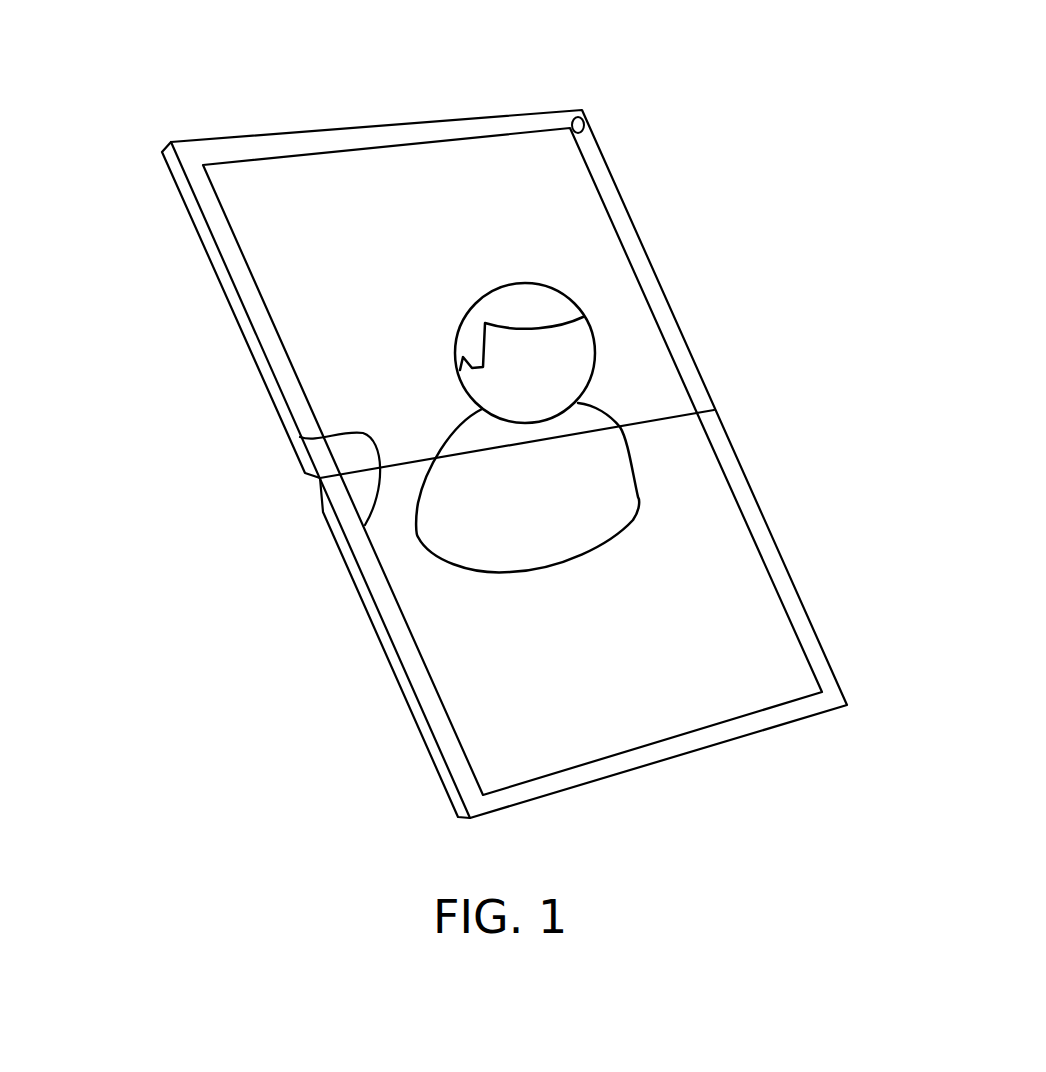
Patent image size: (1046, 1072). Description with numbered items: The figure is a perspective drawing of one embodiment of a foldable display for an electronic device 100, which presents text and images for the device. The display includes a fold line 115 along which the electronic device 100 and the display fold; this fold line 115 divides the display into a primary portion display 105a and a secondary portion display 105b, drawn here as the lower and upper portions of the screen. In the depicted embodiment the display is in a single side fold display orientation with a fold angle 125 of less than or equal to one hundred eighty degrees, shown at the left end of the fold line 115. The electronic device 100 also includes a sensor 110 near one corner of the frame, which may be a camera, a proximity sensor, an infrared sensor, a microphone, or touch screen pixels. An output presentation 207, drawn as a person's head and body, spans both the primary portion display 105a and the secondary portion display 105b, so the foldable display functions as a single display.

The electronic device 100 is at (92, 117).
The primary portion display 105a is at (713, 568).
The secondary portion display 105b is at (583, 277).
The sensor 110 is at (585, 122).
The fold line 115 is at (620, 427).
The fold angle 125 is at (300, 437).
The output presentation 207 is at (597, 342).